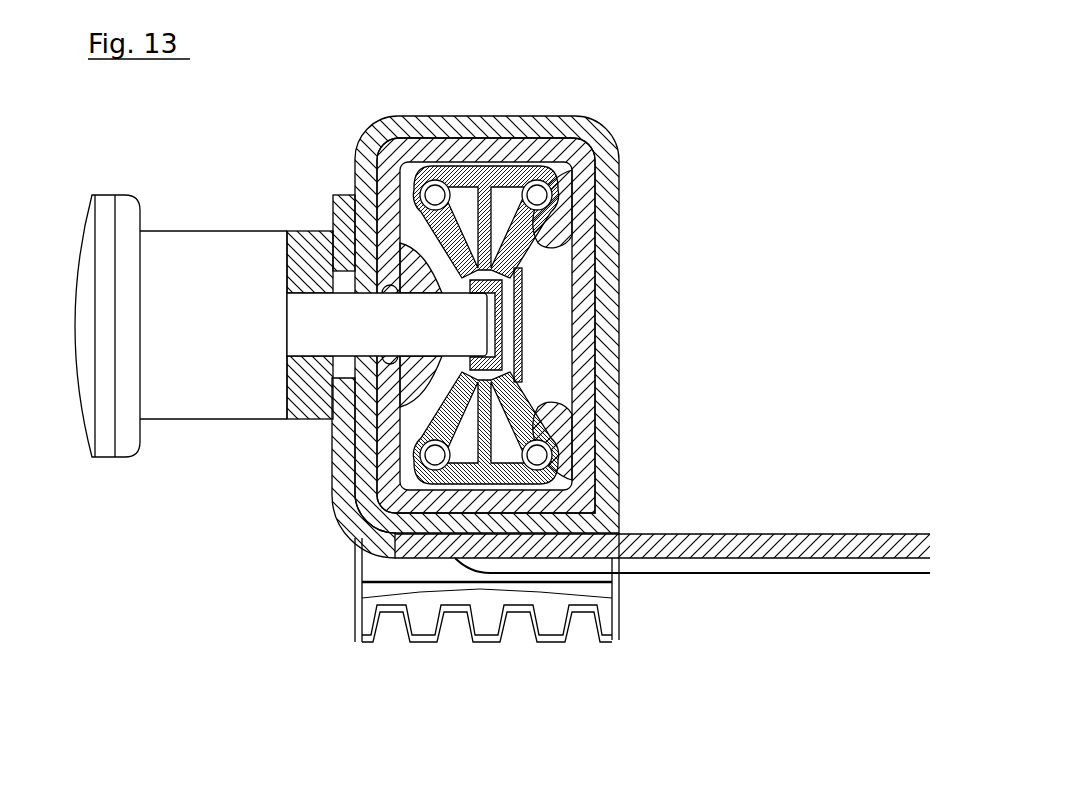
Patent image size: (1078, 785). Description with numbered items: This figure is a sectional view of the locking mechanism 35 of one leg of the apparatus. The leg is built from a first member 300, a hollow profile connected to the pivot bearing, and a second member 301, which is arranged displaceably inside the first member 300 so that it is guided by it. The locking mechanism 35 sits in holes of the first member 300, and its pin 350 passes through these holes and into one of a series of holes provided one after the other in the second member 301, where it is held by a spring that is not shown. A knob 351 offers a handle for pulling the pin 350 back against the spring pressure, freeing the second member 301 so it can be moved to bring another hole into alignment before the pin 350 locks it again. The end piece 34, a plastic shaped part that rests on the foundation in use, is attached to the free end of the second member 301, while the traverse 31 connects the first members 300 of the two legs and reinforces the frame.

The first member 300 is at (610, 201).
The second member 301 is at (583, 173).
The traverse 31 is at (750, 545).
The end piece 34 is at (565, 367).
The locking mechanism 35 is at (59, 408).
The pin 350 is at (350, 330).
The knob 351 is at (206, 262).